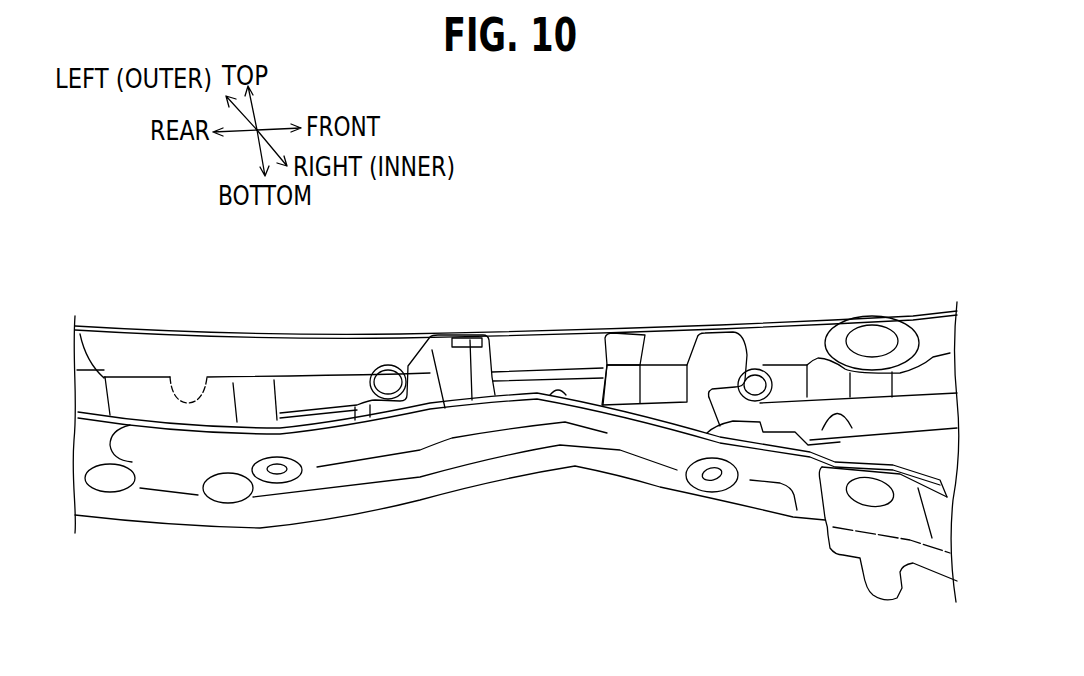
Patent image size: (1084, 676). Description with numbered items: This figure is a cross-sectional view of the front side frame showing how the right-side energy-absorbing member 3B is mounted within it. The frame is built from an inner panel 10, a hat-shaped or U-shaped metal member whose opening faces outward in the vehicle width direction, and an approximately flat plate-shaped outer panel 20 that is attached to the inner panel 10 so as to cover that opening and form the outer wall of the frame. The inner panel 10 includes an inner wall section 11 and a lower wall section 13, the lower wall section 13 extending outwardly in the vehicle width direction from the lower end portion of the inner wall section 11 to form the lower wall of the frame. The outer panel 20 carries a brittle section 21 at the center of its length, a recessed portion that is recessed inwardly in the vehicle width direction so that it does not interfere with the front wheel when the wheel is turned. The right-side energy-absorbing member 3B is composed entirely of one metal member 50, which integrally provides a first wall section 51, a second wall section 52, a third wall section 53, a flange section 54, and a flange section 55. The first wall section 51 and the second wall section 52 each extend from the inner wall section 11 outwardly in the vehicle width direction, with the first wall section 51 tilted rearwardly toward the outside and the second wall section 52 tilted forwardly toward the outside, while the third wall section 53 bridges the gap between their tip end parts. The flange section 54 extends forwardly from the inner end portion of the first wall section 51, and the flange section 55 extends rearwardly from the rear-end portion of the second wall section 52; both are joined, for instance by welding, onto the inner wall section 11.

The inner panel 10 is at (101, 270).
The inner wall section 11 is at (132, 358).
The lower wall section 13 is at (930, 443).
The outer panel 20 is at (413, 487).
The brittle section 21 is at (562, 457).
The member 50 is at (670, 265).
The first wall section 51 is at (600, 358).
The second wall section 52 is at (518, 377).
The third wall section 53 is at (548, 375).
The flange section 54 is at (617, 360).
The flange section 55 is at (457, 338).
The right-side energy-absorbing member 3B is at (647, 215).